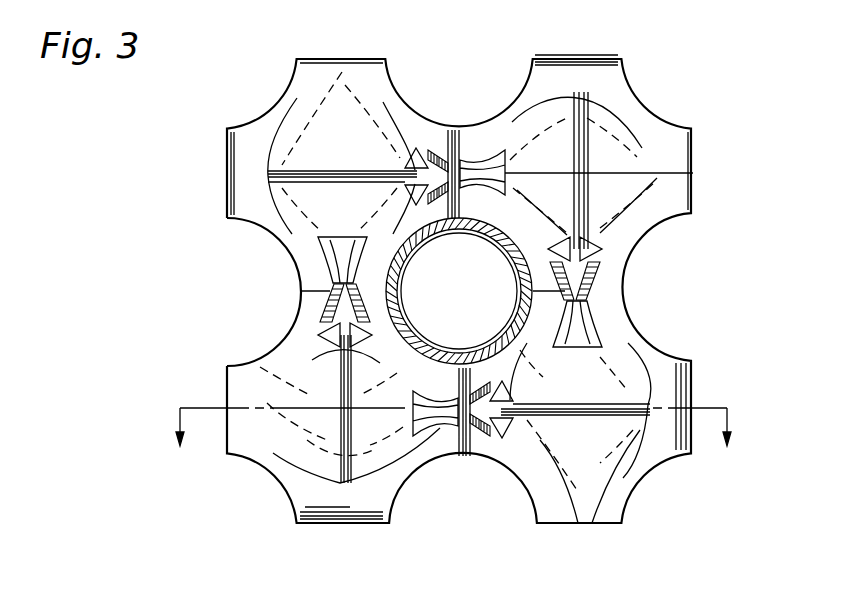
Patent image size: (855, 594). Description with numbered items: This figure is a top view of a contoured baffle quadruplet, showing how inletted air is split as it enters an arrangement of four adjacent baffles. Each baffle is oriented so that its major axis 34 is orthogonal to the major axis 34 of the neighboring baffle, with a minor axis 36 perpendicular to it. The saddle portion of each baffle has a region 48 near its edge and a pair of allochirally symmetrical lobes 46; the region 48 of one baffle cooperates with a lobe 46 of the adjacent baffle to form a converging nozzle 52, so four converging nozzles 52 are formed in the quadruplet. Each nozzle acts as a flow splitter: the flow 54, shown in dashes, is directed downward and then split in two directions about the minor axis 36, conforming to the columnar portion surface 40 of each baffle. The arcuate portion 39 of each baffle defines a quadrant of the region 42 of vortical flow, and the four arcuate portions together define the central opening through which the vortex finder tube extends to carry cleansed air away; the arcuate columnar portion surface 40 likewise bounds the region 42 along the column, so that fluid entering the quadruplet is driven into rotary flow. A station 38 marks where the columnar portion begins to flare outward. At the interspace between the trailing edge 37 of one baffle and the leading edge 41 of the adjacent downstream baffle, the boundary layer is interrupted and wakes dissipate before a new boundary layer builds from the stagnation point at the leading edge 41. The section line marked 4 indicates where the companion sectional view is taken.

The major axis 34 is at (655, 170).
The minor axis 36 is at (580, 140).
The trailing edge 37 is at (343, 59).
The station 38 is at (267, 240).
The arcuate portion 39 is at (440, 255).
The columnar portion surface 40 is at (643, 148).
The leading edge 41 is at (352, 463).
The region of vortical flow 42 is at (476, 304).
The lobe 46 is at (223, 160).
The region 48 is at (477, 137).
The converging nozzle 52 is at (441, 128).
The flow 54 is at (437, 448).
The section line 4- 4 is at (449, 443).